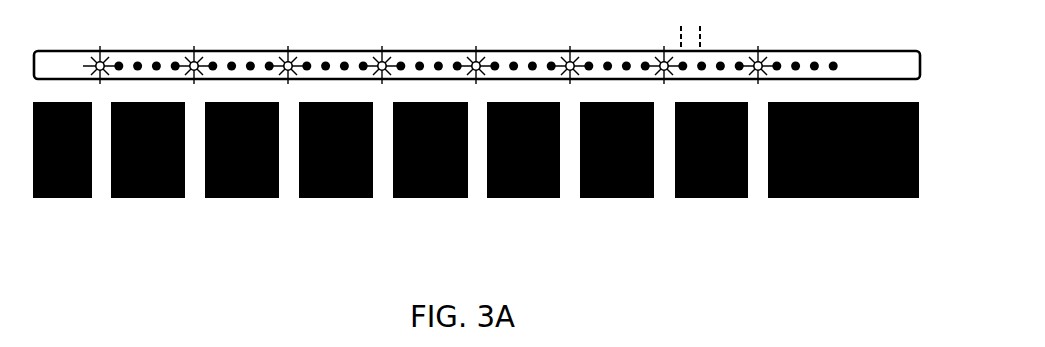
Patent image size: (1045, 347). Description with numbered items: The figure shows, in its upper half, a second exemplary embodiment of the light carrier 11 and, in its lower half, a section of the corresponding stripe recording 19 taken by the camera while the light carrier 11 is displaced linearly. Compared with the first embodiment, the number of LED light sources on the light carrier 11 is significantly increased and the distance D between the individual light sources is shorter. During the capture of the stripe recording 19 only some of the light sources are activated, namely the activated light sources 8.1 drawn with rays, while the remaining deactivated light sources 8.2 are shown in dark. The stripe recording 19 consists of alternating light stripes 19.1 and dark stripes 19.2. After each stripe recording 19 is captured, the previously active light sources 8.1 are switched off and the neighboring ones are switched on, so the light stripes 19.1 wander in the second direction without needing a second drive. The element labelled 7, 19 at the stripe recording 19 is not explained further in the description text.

The light carrier 11 is at (912, 72).
The activated light sources 8.1 is at (194, 80).
The deactivated light sources 8.2 is at (269, 68).
The luminaire module 7 is at (233, 200).
The stripe recording 19 is at (476, 150).
The light stripes 19.1 is at (755, 190).
The dark stripes 19.2 is at (523, 198).
The distance between light sources D is at (650, 30).